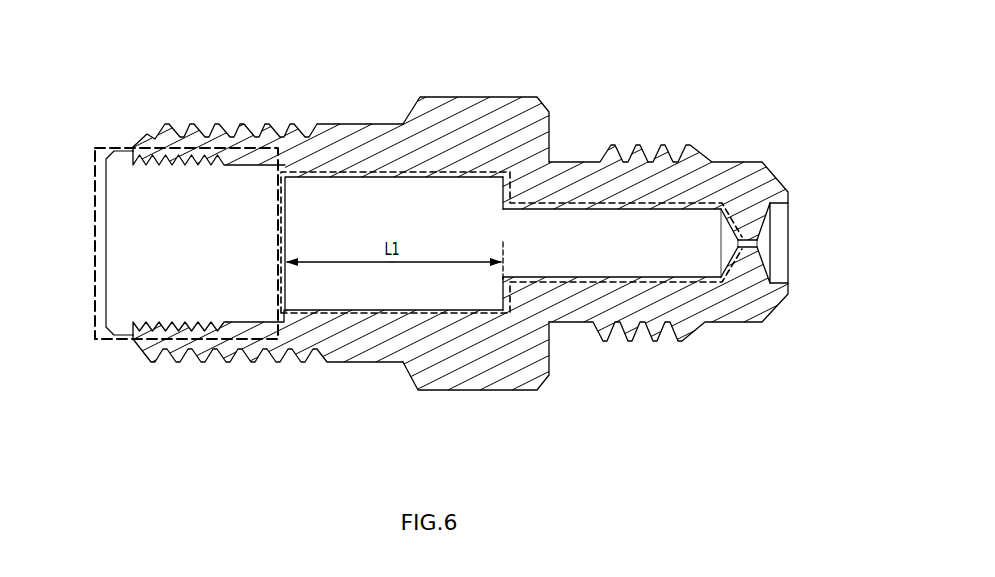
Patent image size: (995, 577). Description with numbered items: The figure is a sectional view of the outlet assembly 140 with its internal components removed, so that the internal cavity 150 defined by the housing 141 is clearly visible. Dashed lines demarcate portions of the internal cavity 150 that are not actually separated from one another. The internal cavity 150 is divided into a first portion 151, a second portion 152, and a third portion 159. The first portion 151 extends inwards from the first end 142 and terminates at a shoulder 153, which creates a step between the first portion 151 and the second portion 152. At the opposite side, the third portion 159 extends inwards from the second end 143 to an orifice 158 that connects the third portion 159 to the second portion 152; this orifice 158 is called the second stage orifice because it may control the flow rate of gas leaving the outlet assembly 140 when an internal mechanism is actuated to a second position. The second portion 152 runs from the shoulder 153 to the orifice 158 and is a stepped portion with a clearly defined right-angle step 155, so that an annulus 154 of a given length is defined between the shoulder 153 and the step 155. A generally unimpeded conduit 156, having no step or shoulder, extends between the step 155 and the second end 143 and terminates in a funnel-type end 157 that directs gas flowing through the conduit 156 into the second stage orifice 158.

The outlet assembly 140 is at (195, 103).
The housing 141 is at (338, 130).
The first end 142 is at (115, 142).
The second end 143 is at (770, 167).
The internal cavity 150 is at (385, 177).
The first portion 151 is at (93, 298).
The second portion 152 is at (385, 313).
The shoulder 153 is at (282, 308).
The annulus 154 is at (445, 205).
The step 155 is at (506, 281).
The conduit 156 is at (603, 230).
The funnel-type end 157 is at (722, 235).
The orifice 158 is at (762, 243).
The third portion 159 is at (783, 219).